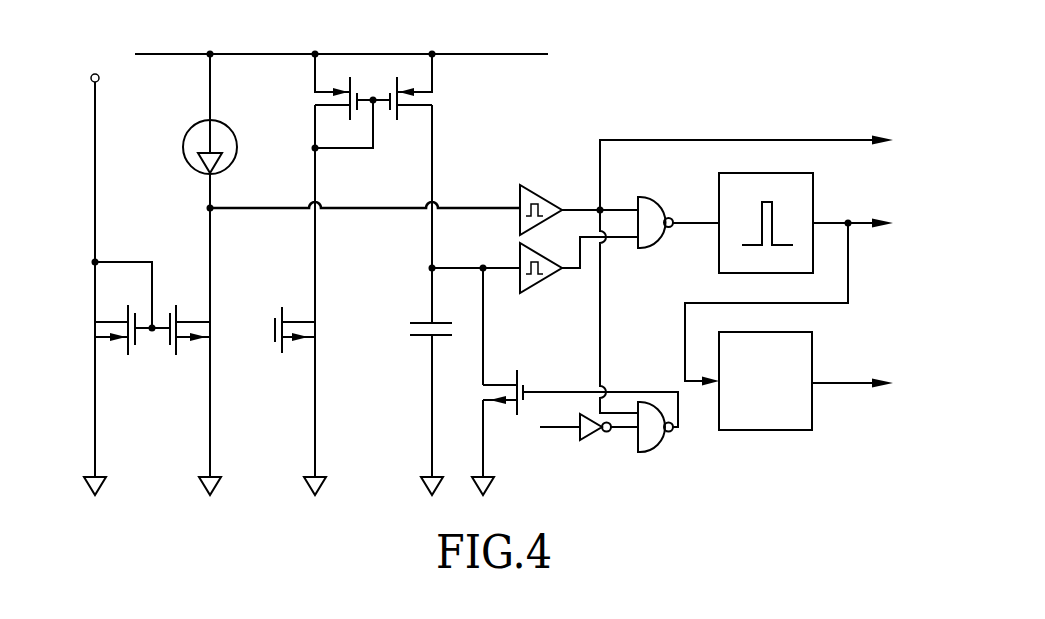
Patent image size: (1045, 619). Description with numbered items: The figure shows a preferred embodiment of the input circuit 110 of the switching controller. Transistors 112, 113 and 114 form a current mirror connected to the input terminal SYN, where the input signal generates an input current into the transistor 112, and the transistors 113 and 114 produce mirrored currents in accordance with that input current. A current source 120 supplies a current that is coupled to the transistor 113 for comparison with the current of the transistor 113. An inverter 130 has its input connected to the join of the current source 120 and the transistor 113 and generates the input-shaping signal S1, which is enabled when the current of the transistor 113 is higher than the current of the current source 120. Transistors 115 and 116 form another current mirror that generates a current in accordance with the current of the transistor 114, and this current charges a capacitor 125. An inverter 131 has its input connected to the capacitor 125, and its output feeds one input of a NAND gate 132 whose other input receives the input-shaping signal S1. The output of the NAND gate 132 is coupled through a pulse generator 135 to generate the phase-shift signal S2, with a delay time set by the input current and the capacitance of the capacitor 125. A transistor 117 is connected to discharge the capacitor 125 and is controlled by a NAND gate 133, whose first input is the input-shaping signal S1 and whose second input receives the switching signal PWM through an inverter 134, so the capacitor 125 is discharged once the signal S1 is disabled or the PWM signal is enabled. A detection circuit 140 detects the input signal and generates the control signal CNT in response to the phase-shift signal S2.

The input circuit 110 is at (778, 62).
The transistor 112 is at (93, 330).
The transistor 113 is at (176, 345).
The transistor 114 is at (282, 353).
The transistor 115 is at (316, 95).
The transistor 116 is at (434, 99).
The transistor 117 is at (481, 395).
The current source 120 is at (184, 130).
The capacitor 125 is at (428, 338).
The inverter 130 is at (539, 196).
The inverter 131 is at (540, 284).
The NAND gate 132 is at (659, 200).
The NAND gate 133 is at (657, 452).
The inverter 134 is at (589, 440).
The pulse generator 135 is at (813, 212).
The detection circuit 140 is at (769, 431).